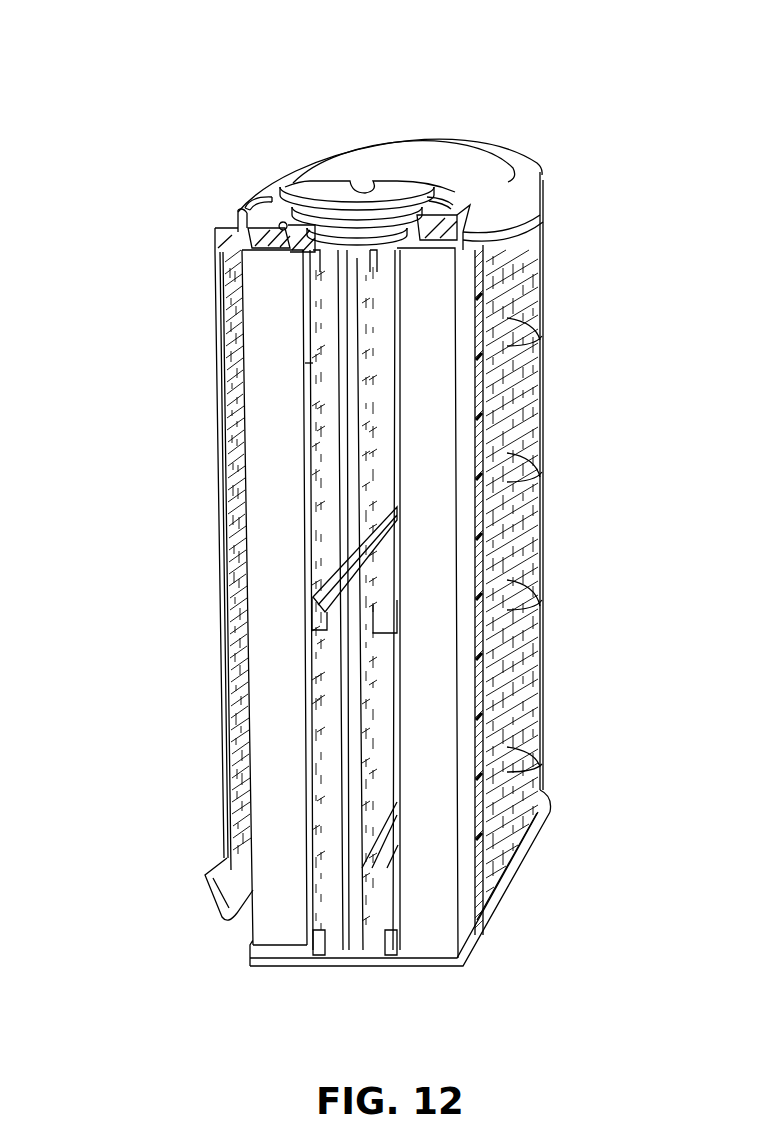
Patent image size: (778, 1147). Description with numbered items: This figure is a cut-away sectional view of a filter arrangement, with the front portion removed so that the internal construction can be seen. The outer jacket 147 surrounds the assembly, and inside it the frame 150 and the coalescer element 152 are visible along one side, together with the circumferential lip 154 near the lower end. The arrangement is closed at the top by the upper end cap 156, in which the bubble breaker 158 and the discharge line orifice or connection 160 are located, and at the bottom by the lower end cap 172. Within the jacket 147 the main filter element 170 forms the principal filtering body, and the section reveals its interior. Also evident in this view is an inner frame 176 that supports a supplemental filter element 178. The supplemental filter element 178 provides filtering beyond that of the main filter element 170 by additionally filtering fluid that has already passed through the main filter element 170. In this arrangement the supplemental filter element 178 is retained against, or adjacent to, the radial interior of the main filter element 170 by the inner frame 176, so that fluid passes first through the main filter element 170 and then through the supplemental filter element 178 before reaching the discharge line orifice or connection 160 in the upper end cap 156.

The jacket 147 is at (564, 411).
The frame 150 is at (235, 424).
The coalescer element 152 is at (223, 633).
The circumferential lip 154 is at (213, 895).
The upper end cap 156 is at (448, 168).
The bubble breaker 158 is at (295, 195).
The discharge line orifice or connection 160 is at (360, 230).
The main filter element 170 is at (248, 502).
The lower end cap 172 is at (330, 965).
The inner frame 176 is at (310, 628).
The supplemental filter element 178 is at (305, 363).